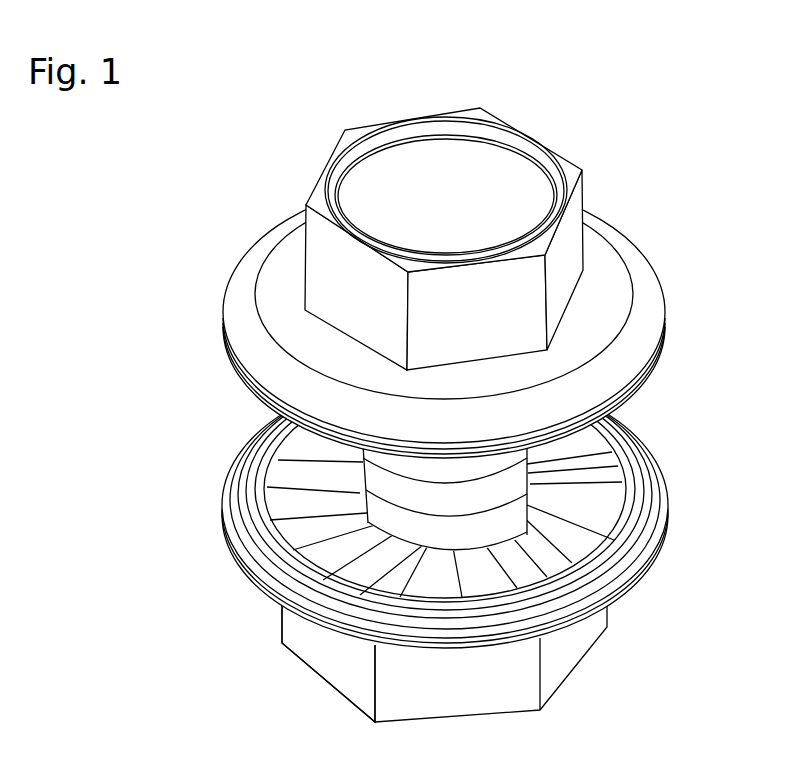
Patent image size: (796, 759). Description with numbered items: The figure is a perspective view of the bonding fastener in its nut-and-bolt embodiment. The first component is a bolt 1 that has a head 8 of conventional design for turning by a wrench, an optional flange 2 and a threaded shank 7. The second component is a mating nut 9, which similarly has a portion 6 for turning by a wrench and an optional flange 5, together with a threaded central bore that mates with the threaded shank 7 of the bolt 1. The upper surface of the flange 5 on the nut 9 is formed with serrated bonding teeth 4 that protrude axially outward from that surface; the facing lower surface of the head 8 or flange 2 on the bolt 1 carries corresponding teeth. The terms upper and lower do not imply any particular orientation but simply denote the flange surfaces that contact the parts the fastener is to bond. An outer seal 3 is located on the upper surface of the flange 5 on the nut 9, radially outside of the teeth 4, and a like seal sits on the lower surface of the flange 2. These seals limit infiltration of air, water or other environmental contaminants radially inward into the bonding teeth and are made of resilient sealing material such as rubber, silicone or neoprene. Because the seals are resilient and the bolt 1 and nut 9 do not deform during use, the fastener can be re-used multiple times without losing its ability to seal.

The bolt 1 is at (507, 177).
The flange 2 is at (603, 317).
The outer seal 3 is at (650, 455).
The serrated bonding teeth 4 is at (578, 512).
The flange 5 is at (608, 603).
The portion for turning by a wrench 6 is at (568, 645).
The threaded shank 7 is at (367, 483).
The head 8 is at (317, 248).
The mating nut 9 is at (282, 650).